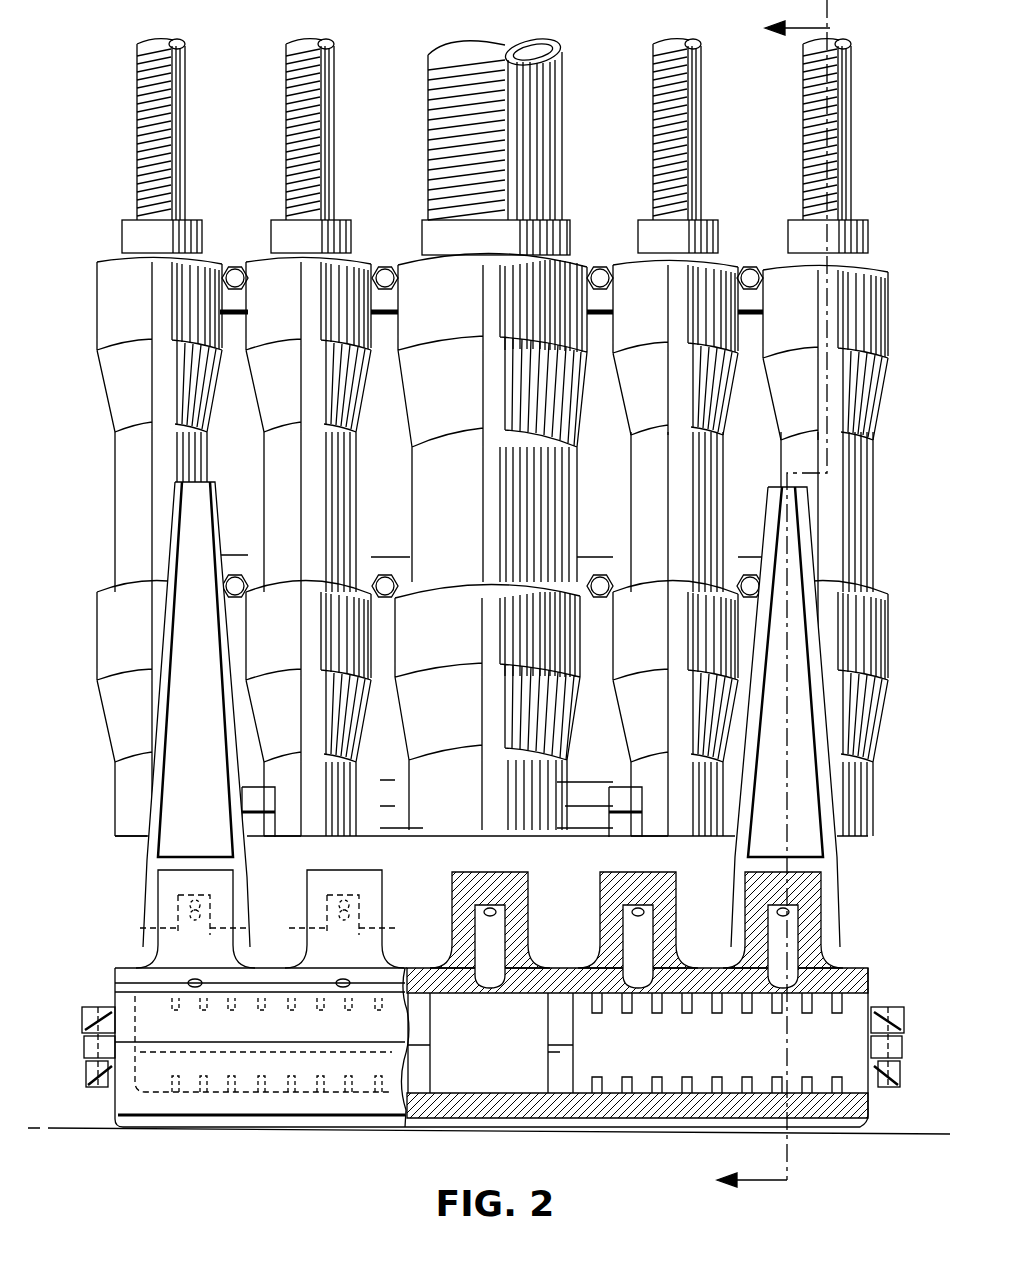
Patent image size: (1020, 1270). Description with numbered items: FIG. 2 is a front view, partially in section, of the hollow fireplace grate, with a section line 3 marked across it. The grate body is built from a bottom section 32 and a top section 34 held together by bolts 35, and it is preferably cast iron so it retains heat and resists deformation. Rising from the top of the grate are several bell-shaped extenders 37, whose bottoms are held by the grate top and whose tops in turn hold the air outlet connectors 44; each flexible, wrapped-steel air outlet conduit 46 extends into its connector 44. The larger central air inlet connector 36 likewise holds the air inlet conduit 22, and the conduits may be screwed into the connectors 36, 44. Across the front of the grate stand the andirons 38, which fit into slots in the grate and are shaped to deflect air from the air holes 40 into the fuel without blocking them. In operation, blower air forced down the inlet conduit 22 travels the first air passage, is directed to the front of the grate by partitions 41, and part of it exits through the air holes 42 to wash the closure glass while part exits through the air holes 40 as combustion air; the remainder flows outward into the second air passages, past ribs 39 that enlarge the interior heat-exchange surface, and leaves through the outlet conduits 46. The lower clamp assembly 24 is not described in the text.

The section line 3- 3 is at (785, 607).
The air inlet conduit 22 is at (452, 132).
The lower clamp assembly 24 is at (97, 625).
The bottom section 32 is at (330, 1112).
The top section 34 is at (860, 962).
The bolts 35 is at (235, 266).
The air inlet connector 36 is at (426, 240).
The extender 37 is at (880, 312).
The andirons 38 is at (180, 730).
The ribs 39 is at (290, 1085).
The air holes 40 is at (185, 896).
The partitions 41 is at (555, 1020).
The air holes 42 is at (194, 990).
The air outlet connector 44 is at (142, 232).
The air outlet conduit 46 is at (148, 124).